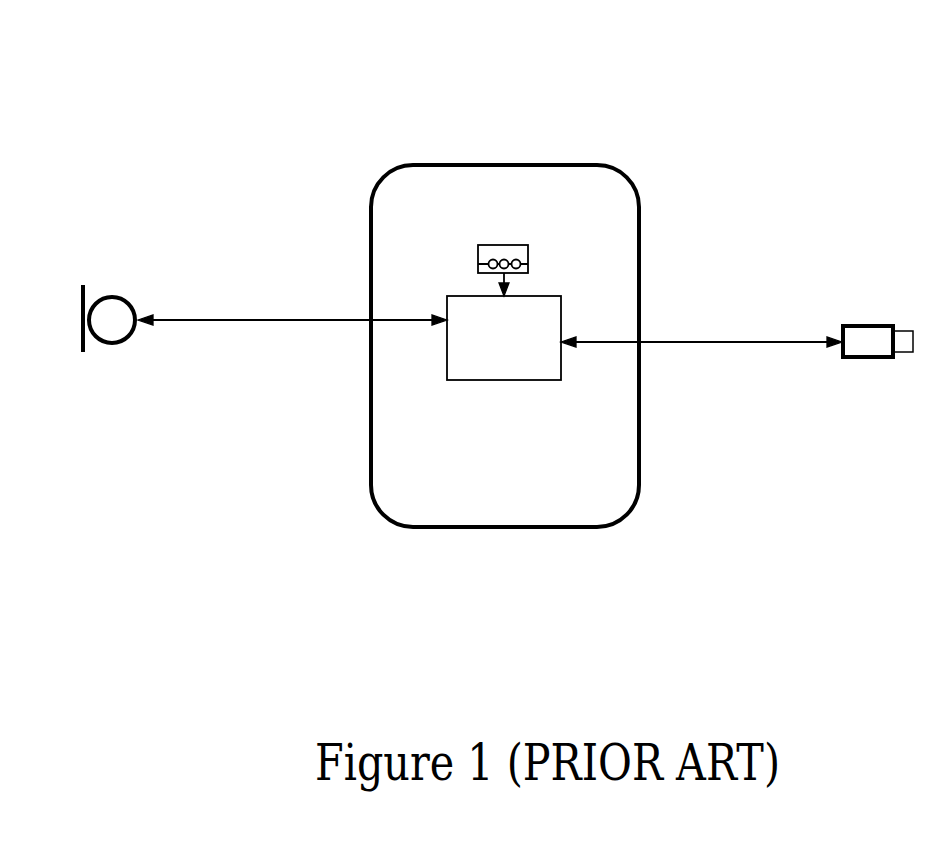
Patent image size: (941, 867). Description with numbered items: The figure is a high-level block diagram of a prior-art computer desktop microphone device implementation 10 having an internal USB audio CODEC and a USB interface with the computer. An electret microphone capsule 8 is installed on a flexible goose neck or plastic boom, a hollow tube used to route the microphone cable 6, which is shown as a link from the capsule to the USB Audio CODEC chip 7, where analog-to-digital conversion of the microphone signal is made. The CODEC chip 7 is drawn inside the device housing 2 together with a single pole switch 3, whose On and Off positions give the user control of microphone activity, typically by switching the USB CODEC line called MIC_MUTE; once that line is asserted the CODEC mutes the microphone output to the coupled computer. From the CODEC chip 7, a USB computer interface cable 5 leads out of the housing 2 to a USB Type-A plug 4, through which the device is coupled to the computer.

The housing 2 is at (640, 224).
The single pole switch 3 is at (504, 245).
The USB Type-A plug 4 is at (873, 325).
The USB computer interface cable 5 is at (749, 341).
The microphone cable 6 is at (234, 319).
The USB Audio CODEC chip 7 is at (492, 382).
The electret microphone capsule 8 is at (110, 296).
The computer desktop microphone device implementation 10 is at (234, 110).